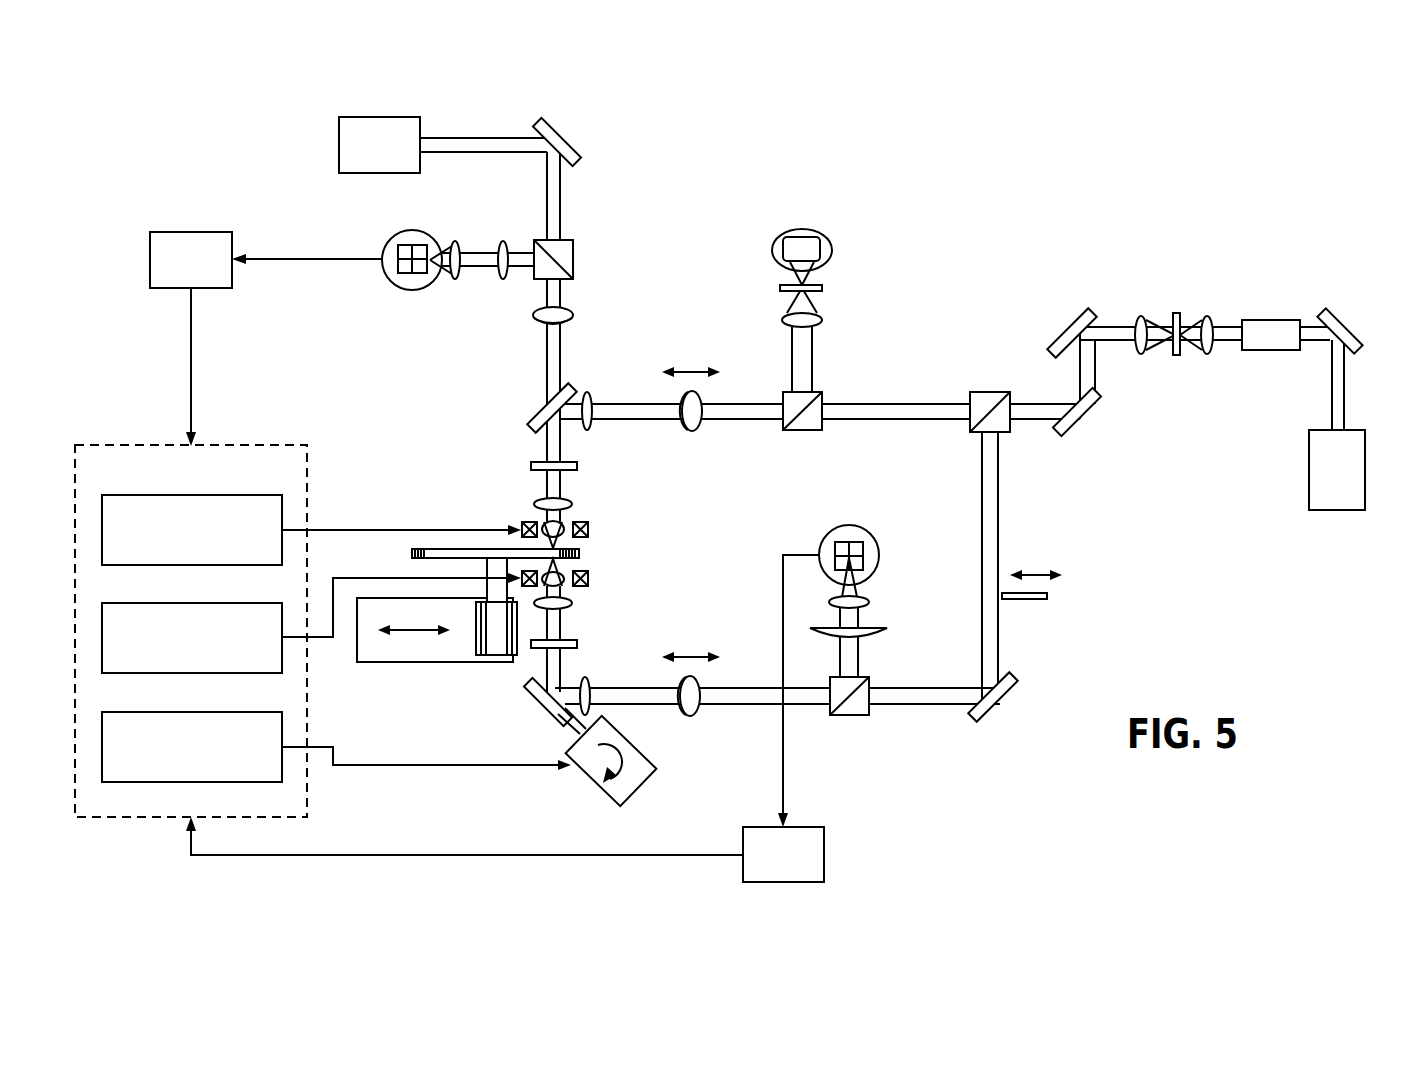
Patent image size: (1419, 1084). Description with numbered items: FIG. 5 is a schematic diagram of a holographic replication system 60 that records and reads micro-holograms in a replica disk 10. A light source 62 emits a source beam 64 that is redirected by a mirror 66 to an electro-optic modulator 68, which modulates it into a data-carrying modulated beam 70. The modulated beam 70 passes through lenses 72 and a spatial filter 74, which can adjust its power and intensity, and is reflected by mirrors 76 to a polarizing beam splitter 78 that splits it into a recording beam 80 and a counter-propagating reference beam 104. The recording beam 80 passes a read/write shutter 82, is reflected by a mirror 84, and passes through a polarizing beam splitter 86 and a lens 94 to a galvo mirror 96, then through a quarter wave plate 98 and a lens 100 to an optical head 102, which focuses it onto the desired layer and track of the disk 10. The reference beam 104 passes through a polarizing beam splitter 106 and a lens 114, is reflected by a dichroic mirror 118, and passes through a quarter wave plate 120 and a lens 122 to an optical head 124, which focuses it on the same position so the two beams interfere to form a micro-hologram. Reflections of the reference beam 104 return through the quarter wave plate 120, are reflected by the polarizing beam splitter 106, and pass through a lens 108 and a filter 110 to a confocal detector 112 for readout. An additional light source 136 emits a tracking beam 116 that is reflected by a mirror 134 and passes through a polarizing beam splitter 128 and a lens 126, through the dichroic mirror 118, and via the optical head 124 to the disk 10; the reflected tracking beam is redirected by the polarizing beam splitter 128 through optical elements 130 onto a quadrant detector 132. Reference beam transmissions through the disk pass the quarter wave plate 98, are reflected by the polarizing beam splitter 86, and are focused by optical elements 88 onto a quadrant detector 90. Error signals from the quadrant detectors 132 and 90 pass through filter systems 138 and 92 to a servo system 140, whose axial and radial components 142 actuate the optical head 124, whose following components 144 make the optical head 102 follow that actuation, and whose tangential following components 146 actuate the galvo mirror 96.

The replica disk 10 is at (582, 552).
The holographic replication system 60 is at (1015, 220).
The light source 62 is at (1308, 470).
The source beam 64 is at (1345, 384).
The mirror 66 is at (1352, 320).
The electro-optic modulator 68 is at (1272, 319).
The modulated beam 70 is at (1225, 342).
The lenses 72 is at (1141, 314).
The spatial filter 74 is at (1177, 357).
The mirrors 76 is at (1062, 326).
The polarizing beam splitter 78 is at (990, 393).
The recording beam 80 is at (732, 705).
The movable plate 82 is at (1025, 600).
The mirror 84 is at (1003, 706).
The polarizing beam splitter 86 is at (850, 716).
The optical elements 88 is at (868, 602).
The quadrant detector 90 is at (880, 550).
The filter system 92 is at (800, 826).
The lens 94 is at (705, 685).
The galvo mirror 96 is at (540, 705).
The quarter wave plate 98 is at (578, 644).
The lens 100 is at (573, 605).
The optical head 102 is at (600, 578).
The reference beam 104 is at (625, 402).
The polarizing beam splitter 106 is at (800, 432).
The lens 108 is at (824, 322).
The filter 110 is at (824, 287).
The confocal detector 112 is at (812, 232).
The lens 114 is at (705, 400).
The tracking beam 116 is at (475, 136).
The dichroic mirror 118 is at (533, 405).
The quarter wave plate 120 is at (578, 466).
The lens 122 is at (573, 505).
The optical head 124 is at (600, 528).
The lens 126 is at (575, 316).
The polarizing beam splitter 128 is at (575, 262).
The optical elements 130 is at (455, 240).
The quadrant detector 132 is at (393, 283).
The mirror 134 is at (572, 135).
The additional light source 136 is at (370, 174).
The filter system 138 is at (192, 231).
The servo system 140 is at (268, 444).
The axial and radial servo-mechanical components 142 is at (203, 566).
The following servo-mechanical components 144 is at (180, 674).
The tangential following components 146 is at (202, 783).